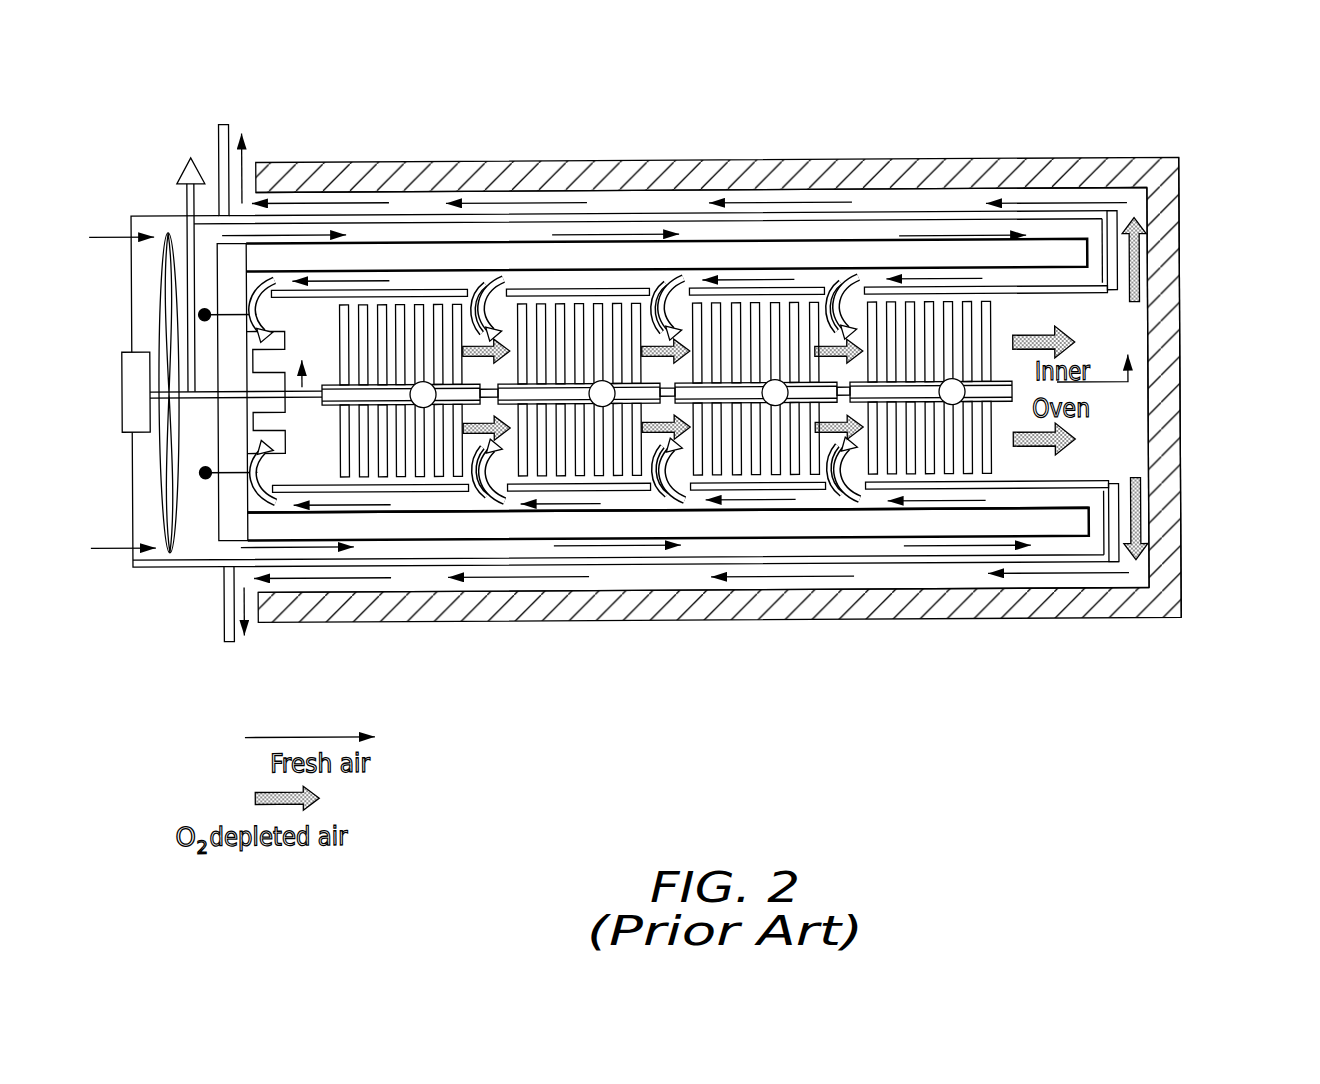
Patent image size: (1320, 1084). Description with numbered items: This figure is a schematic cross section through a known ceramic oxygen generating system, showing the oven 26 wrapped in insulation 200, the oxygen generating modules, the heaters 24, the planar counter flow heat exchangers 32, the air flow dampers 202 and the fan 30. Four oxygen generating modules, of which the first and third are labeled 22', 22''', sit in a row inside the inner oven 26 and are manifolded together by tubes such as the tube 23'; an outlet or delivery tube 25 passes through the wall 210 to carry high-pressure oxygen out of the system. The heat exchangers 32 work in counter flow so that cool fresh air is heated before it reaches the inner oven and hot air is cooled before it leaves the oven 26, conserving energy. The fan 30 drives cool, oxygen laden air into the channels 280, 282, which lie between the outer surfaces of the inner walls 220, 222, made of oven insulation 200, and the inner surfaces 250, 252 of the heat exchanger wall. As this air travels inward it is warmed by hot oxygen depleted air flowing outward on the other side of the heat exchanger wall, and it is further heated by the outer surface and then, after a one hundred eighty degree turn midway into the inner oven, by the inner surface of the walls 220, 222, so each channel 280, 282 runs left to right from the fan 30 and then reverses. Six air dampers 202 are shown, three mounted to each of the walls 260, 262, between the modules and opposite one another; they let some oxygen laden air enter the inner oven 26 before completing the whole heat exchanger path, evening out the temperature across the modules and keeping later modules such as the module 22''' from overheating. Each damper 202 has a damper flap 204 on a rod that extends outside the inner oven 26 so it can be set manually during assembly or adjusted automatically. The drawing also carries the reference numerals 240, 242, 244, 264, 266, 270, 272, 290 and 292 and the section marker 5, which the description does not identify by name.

The insulation 200 is at (1022, 624).
The top insulating wall 240 is at (860, 166).
The bottom insulating wall 242 is at (915, 607).
The end wall 244 is at (1172, 375).
The oven 26 is at (1240, 582).
The fan 30 is at (170, 574).
The heaters 24 is at (203, 473).
The outlet or delivery tube 25 is at (298, 398).
The upper oxygen outlet pipe 270 is at (224, 121).
The lower oxygen outlet pipe 272 is at (223, 619).
The inner surface of heat exchanger wall 250 is at (405, 211).
The inner surface of heat exchanger wall 252 is at (1092, 562).
The wall 260 is at (1035, 285).
The wall 262 is at (1080, 480).
The upper oxygen flow passage 264 is at (1110, 264).
The lower oxygen flow passage 266 is at (1110, 521).
The wall 210 is at (247, 256).
The inner wall 220 is at (642, 256).
The inner wall 222 is at (708, 525).
The upper return channel 290 is at (968, 202).
The lower return channel 292 is at (822, 577).
The channel 280 is at (441, 232).
The channel 282 is at (440, 546).
The damper flap 204 is at (503, 509).
The air flow damper 202 is at (648, 508).
The planar counter flow heat exchanger 32 is at (718, 577).
The oxygen generating module 22' is at (402, 494).
The oxygen generating module 22''' is at (755, 284).
The tube 23' is at (663, 297).
The section line 5- 5 is at (715, 355).